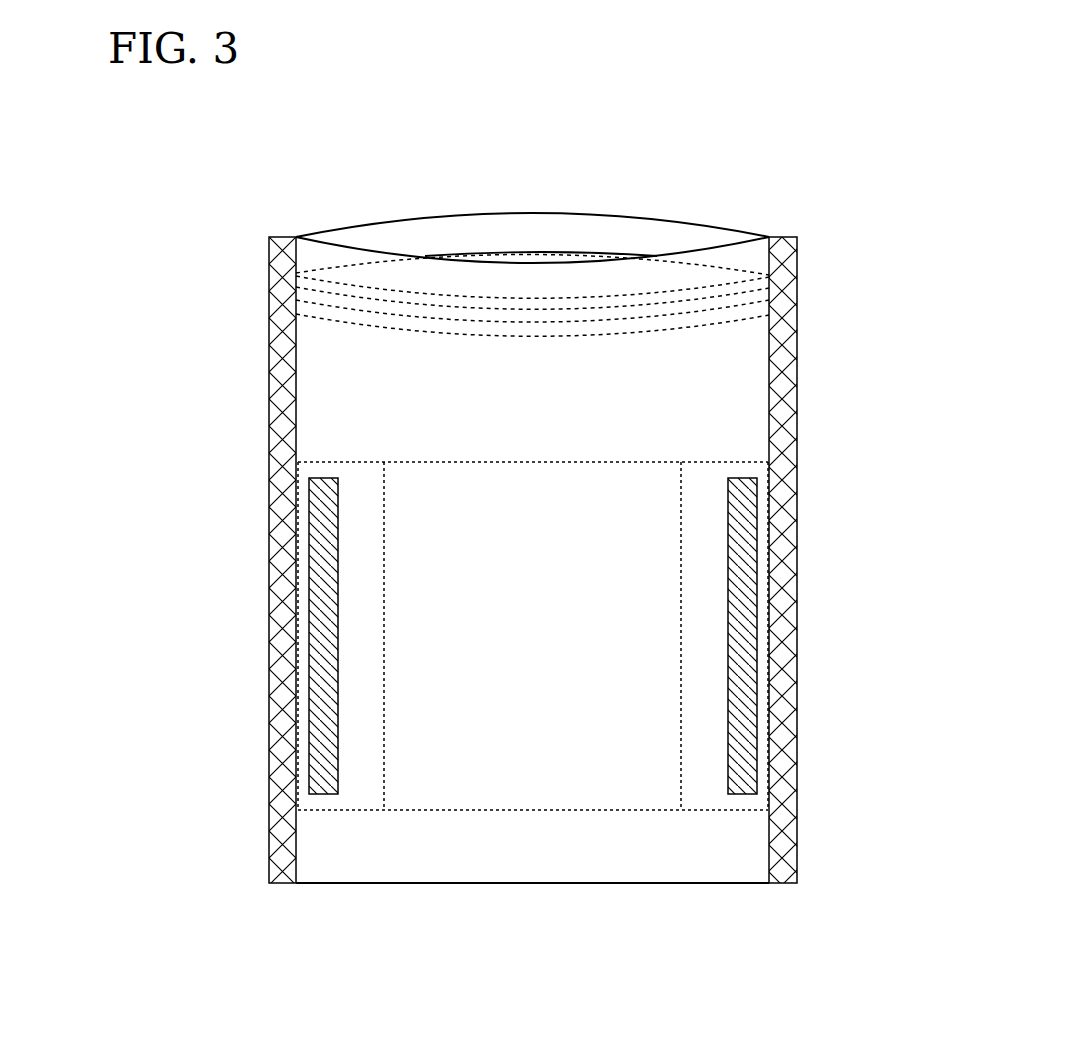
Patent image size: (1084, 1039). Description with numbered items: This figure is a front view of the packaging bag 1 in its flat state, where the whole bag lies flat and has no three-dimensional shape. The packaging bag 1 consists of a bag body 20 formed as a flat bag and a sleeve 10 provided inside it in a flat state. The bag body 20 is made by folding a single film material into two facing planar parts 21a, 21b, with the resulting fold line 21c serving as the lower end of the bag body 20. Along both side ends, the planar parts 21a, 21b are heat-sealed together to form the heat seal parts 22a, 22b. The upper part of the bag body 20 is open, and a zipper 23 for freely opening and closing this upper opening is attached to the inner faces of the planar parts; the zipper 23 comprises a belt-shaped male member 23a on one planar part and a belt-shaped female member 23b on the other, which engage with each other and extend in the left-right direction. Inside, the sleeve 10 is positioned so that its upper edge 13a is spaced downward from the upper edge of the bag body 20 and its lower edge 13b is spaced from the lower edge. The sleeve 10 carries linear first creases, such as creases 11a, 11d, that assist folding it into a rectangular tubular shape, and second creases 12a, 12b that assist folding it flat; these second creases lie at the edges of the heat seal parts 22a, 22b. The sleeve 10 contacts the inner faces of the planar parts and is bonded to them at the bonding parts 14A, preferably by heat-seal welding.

The packaging bag 1 is at (712, 198).
The sleeve 10 is at (510, 748).
The first crease 11a is at (384, 587).
The first crease 11d is at (681, 632).
The second crease 12a is at (296, 590).
The second crease 12b is at (770, 647).
The upper edge of the sleeve 13a is at (549, 462).
The lower edge of the sleeve 13b is at (622, 810).
The bonding part 14A is at (309, 752).
The bag body 20 is at (345, 380).
The planar part 21a is at (648, 268).
The planar part 21b is at (400, 221).
The fold line 21c is at (563, 883).
The heat seal part 22a is at (278, 655).
The heat seal part 22b is at (783, 590).
The zipper 23 is at (547, 308).
The male member 23a is at (337, 318).
The female member 23b is at (483, 252).